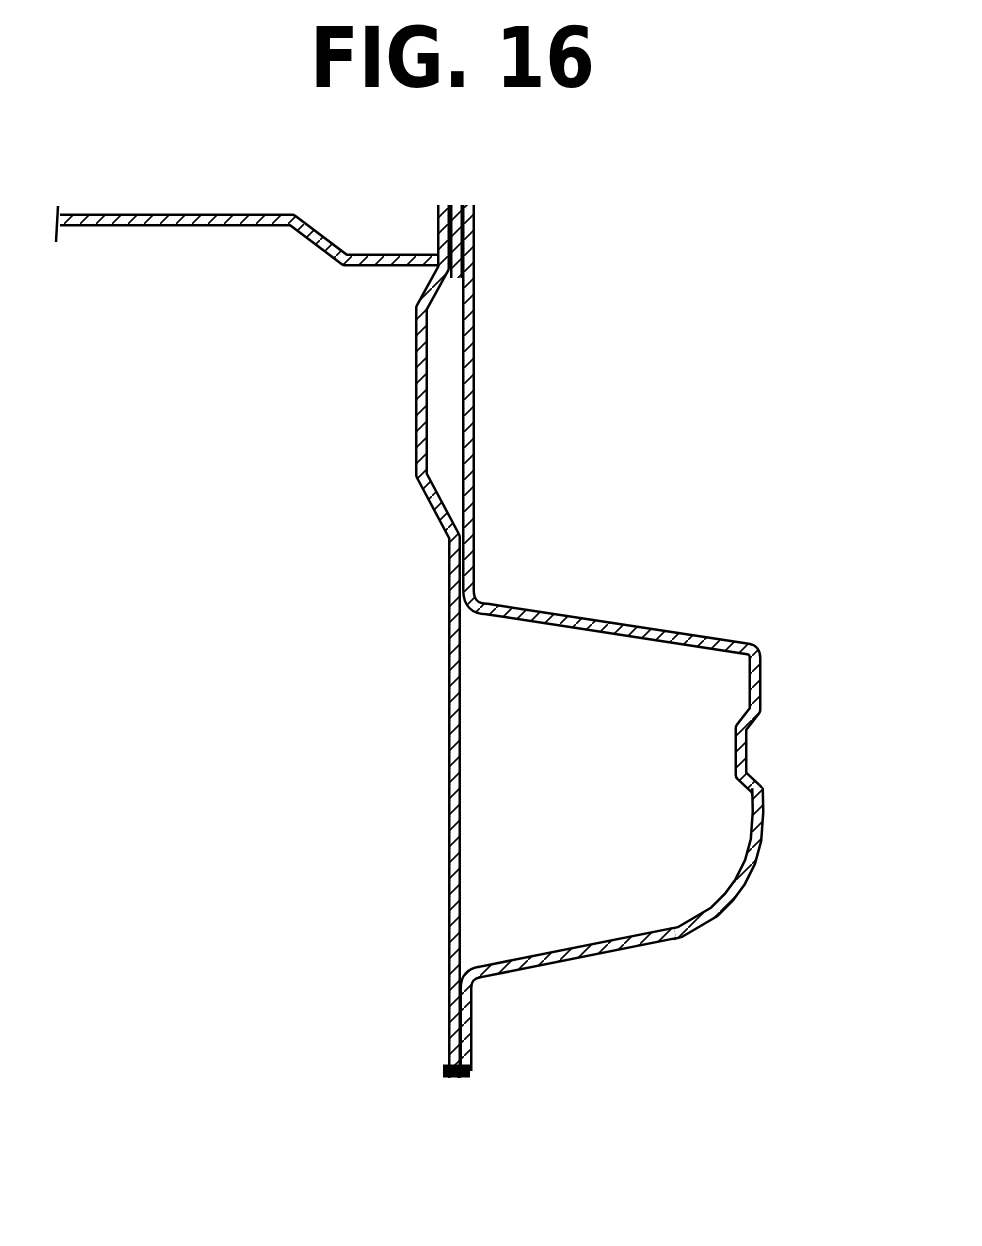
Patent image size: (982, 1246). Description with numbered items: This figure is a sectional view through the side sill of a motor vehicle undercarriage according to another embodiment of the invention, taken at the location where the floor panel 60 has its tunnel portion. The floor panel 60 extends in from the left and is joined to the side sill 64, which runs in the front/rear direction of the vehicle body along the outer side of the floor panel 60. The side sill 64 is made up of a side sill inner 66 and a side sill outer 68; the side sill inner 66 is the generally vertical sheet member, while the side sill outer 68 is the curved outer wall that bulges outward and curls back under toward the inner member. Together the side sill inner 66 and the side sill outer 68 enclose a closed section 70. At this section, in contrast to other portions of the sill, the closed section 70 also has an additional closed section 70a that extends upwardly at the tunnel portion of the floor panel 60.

The floor panel 60 is at (272, 213).
The side sill inner 66 is at (447, 890).
The closed section 70 is at (630, 648).
The additional closed section 70a is at (447, 381).
The side sill outer 68 is at (757, 857).
The side sill 64 is at (608, 995).